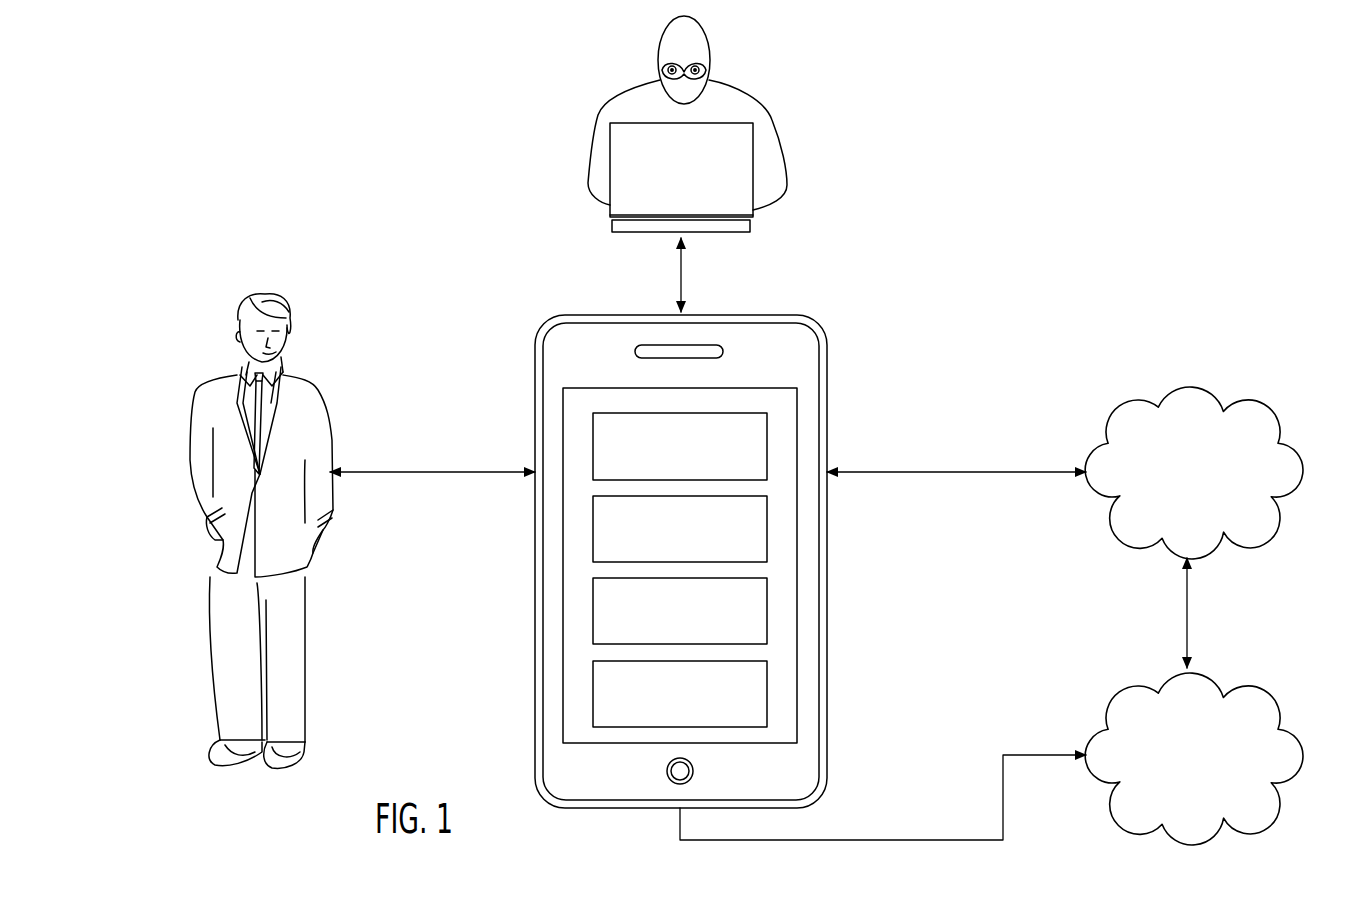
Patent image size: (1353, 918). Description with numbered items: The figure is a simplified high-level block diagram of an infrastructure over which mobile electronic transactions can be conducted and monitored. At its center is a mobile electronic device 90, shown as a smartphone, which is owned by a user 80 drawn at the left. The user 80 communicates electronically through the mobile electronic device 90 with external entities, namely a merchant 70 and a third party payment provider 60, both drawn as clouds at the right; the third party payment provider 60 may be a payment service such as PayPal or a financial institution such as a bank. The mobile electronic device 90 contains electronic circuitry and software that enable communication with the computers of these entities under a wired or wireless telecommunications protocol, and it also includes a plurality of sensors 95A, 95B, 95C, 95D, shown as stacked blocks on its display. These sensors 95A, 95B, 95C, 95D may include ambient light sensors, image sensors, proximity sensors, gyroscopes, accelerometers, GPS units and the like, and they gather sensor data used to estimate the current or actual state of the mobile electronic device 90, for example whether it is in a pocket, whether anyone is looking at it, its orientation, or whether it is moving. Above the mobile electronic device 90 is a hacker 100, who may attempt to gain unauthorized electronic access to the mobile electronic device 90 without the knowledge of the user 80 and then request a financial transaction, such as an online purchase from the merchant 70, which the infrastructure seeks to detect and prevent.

The user 80 is at (215, 290).
The hacker 100 is at (573, 118).
The mobile electronic device 90 is at (828, 387).
The sensor 95A is at (680, 446).
The sensor 95B is at (680, 529).
The sensor 95C is at (680, 611).
The sensor 95D is at (680, 694).
The merchant 70 is at (1236, 512).
The third party payment provider 60 is at (1206, 811).